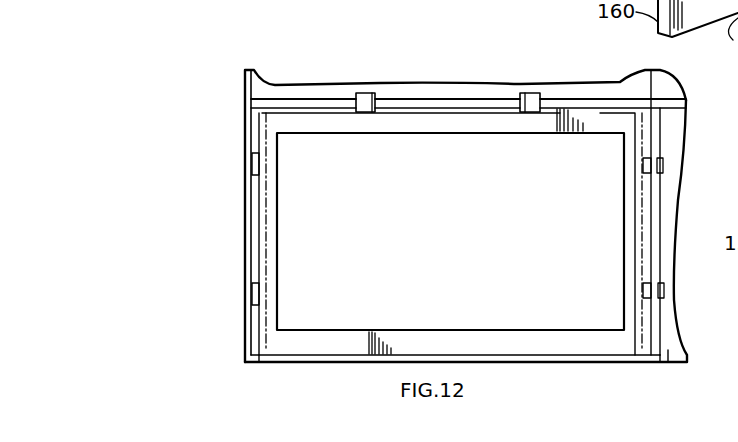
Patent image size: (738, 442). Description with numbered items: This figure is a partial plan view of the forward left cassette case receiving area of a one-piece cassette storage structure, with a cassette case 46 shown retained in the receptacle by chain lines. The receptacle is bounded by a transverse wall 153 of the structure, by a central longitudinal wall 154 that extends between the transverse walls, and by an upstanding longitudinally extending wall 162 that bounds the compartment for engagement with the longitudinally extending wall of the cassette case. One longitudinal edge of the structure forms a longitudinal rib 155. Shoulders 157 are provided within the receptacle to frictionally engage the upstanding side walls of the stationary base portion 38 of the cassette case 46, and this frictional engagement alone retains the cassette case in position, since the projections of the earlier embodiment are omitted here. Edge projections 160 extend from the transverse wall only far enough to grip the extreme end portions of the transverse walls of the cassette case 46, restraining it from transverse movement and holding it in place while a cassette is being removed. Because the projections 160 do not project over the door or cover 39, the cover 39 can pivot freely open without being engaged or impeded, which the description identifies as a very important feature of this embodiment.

The transverse wall 153 is at (247, 128).
The central longitudinal wall 154 is at (328, 100).
The first upstanding longitudinally extending wall 162 is at (452, 102).
The longitudinal rib 155 is at (354, 361).
The base portion 38 is at (264, 335).
The cover 39 is at (288, 194).
The cassette case 46 is at (308, 235).
The shoulders 157 is at (375, 110).
The edge projections 160 is at (262, 362).